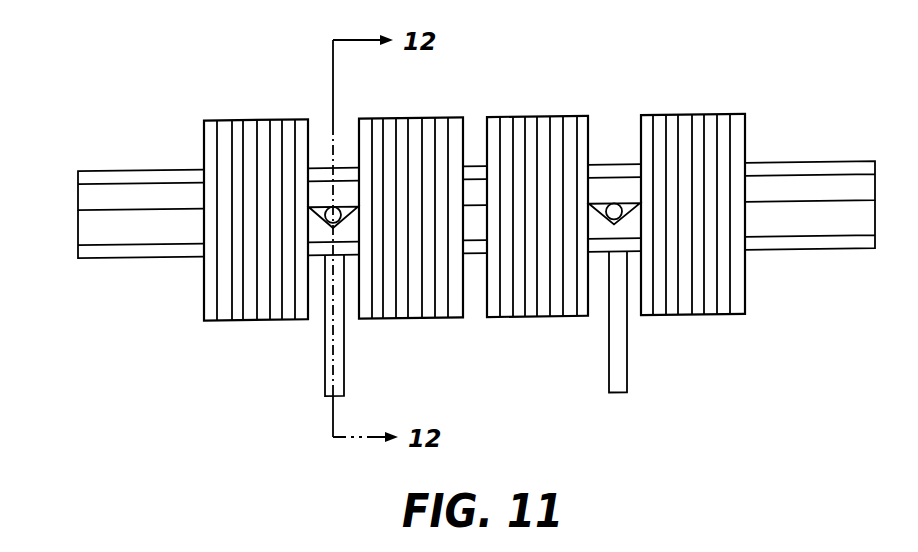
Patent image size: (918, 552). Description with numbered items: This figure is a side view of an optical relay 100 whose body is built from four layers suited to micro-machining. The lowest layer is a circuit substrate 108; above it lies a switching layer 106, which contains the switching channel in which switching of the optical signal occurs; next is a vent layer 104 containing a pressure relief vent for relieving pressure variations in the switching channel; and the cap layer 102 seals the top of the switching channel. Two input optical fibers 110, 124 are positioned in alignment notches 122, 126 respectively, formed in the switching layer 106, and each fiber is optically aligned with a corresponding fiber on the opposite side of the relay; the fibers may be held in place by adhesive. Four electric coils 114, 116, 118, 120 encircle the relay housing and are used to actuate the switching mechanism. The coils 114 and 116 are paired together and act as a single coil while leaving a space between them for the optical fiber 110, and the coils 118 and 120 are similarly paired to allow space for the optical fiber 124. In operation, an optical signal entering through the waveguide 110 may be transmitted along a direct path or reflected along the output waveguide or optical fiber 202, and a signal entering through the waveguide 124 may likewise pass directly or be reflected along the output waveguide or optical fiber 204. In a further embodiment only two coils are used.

The optical relay 100 is at (173, 87).
The cap layer 102 is at (802, 162).
The vent layer 104 is at (90, 198).
The switching layer 106 is at (90, 229).
The circuit substrate 108 is at (806, 250).
The optical fiber or waveguide 110 is at (328, 208).
The electric coil 114 is at (238, 322).
The electric coil 116 is at (425, 116).
The electric coil 118 is at (507, 318).
The electric coil 120 is at (708, 114).
The alignment notch 122 is at (337, 208).
The optical fiber 124 is at (610, 204).
The alignment notch 126 is at (617, 204).
The output waveguide or optical fiber 202 is at (325, 348).
The output waveguide or optical fiber 204 is at (609, 345).